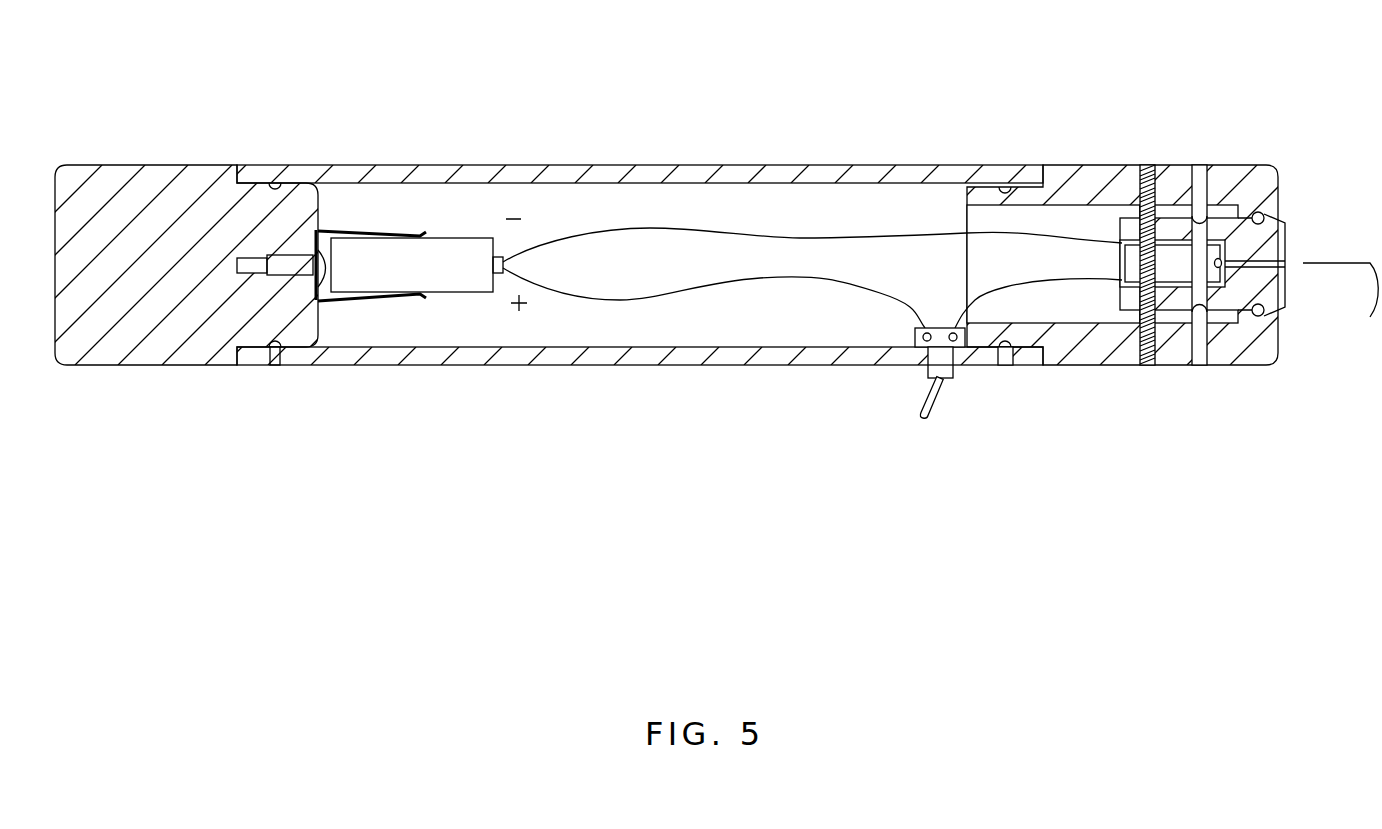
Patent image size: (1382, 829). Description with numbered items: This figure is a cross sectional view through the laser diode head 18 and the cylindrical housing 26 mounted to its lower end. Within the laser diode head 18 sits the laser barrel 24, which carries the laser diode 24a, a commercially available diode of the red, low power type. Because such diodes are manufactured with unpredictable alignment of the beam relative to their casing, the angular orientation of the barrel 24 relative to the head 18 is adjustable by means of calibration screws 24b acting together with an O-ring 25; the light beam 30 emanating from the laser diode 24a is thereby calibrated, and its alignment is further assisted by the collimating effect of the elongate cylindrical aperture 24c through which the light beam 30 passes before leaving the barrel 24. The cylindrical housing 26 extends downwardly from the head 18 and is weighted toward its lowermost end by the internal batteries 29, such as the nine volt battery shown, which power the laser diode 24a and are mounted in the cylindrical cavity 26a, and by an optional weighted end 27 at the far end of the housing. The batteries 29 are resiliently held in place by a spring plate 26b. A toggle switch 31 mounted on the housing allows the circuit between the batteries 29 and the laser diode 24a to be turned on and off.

The laser diode head 18 is at (1098, 165).
The laser barrel 24 is at (1283, 288).
The laser diode 24a is at (1207, 250).
The calibration screws 24b is at (1147, 165).
The elongate cylindrical aperture 24c is at (1272, 253).
The O-ring 25 is at (1272, 217).
The cylindrical housing 26 is at (817, 165).
The cylindrical cavity 26a is at (655, 276).
The spring plate 26b is at (428, 300).
The weighted end 27 is at (195, 167).
The batteries 29 is at (467, 250).
The light beam 30 is at (1340, 298).
The toggle switch 31 is at (927, 418).